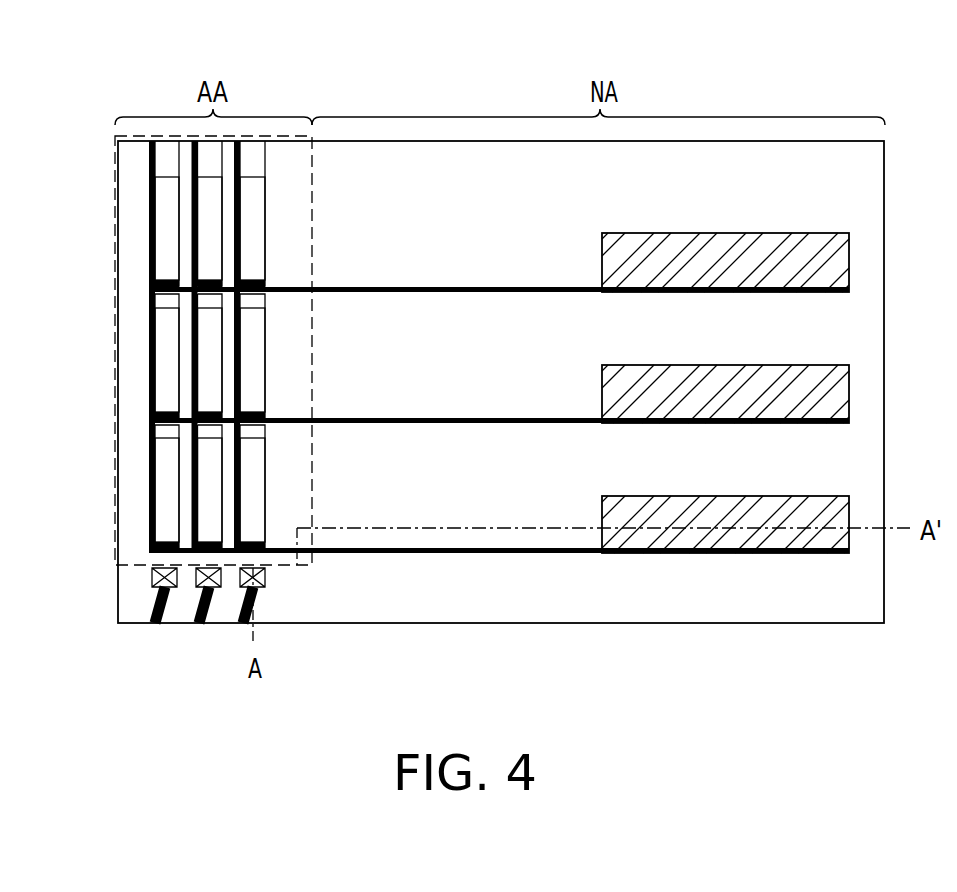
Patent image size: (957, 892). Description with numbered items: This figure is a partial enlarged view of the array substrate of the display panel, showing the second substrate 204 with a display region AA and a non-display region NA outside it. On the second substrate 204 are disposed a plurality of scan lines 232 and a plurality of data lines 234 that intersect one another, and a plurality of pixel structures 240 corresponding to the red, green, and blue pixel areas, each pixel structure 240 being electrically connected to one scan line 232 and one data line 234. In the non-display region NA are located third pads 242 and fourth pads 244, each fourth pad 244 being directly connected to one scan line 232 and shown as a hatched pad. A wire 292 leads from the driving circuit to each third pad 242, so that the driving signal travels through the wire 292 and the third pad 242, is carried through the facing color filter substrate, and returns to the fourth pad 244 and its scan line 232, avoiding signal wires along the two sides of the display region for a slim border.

The second substrate 204 is at (843, 195).
The data lines 234 is at (148, 170).
The pixel structures 240 is at (257, 517).
The scan lines 232 is at (277, 285).
The fourth pads 244 is at (828, 517).
The third pads 242 is at (266, 576).
The wire 292 is at (240, 614).